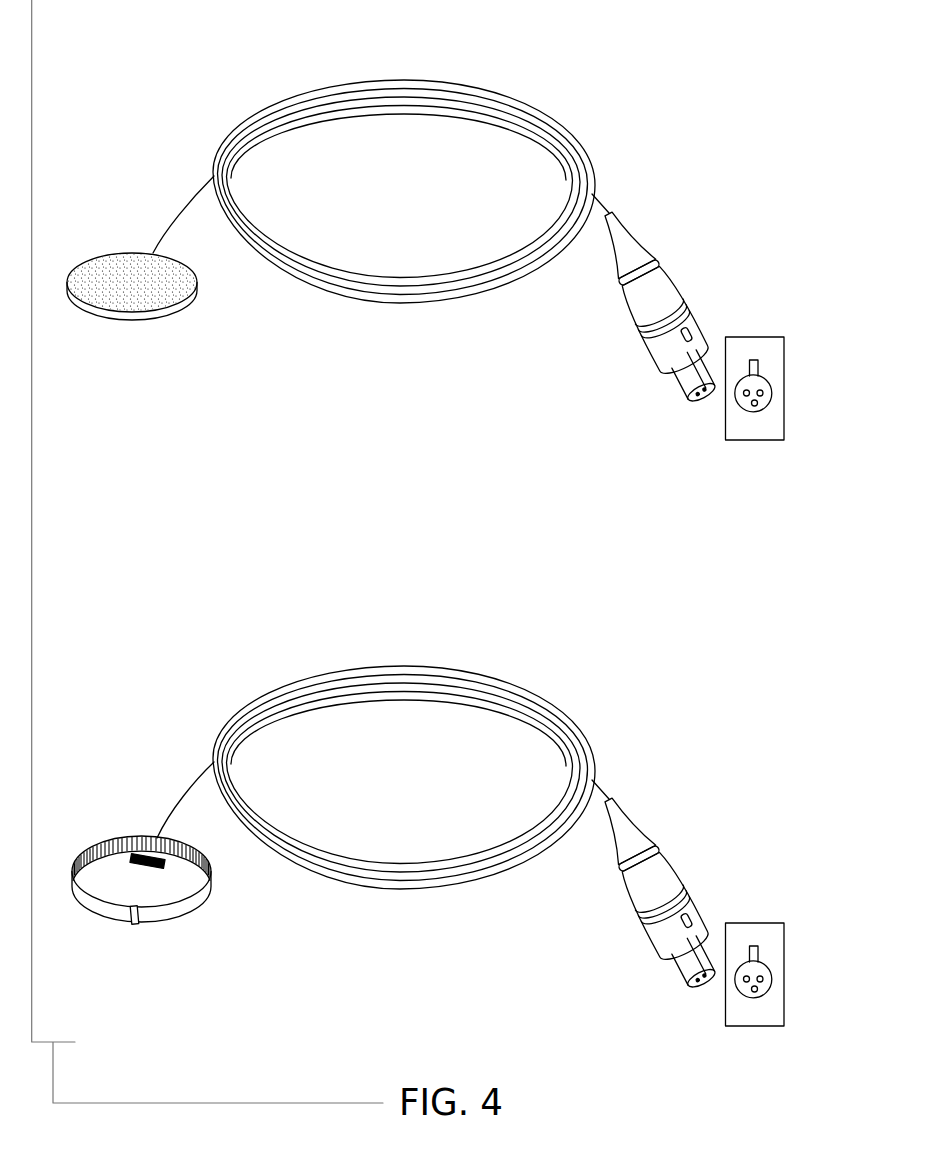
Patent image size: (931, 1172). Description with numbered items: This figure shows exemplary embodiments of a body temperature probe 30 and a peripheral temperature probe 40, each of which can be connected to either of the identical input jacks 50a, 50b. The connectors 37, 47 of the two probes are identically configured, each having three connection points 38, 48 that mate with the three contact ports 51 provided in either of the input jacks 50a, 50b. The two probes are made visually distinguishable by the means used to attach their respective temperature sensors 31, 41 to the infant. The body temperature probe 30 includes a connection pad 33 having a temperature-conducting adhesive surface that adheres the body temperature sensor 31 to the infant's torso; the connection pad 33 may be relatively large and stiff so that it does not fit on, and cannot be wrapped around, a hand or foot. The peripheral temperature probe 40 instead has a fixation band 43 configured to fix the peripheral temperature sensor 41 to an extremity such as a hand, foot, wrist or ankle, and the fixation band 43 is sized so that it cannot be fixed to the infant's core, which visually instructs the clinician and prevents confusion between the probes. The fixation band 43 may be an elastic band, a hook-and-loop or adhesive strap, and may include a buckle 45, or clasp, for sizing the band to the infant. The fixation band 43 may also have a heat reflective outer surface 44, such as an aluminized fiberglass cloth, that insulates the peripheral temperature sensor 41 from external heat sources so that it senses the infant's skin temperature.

The body temperature probe 30 is at (606, 55).
The body temperature sensor 31 is at (157, 333).
The connection pad 33 is at (124, 323).
The connector 37 is at (652, 365).
The connection points 38 is at (700, 398).
The input jack 50a is at (770, 392).
The contact ports 51 is at (767, 407).
The peripheral temperature probe 40 is at (606, 641).
The peripheral temperature sensor 41 is at (150, 866).
The fixation band 43 is at (93, 905).
The heat reflective outer surface 44 is at (183, 857).
The buckle 45 is at (132, 924).
The connector 47 is at (652, 951).
The connection points 48 is at (700, 984).
The input jack 50b is at (770, 978).